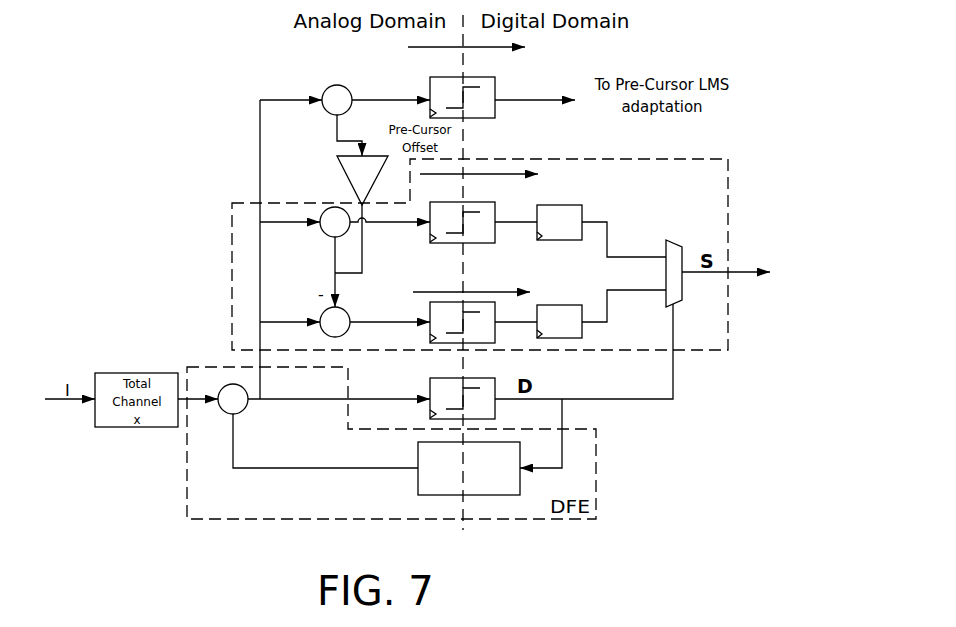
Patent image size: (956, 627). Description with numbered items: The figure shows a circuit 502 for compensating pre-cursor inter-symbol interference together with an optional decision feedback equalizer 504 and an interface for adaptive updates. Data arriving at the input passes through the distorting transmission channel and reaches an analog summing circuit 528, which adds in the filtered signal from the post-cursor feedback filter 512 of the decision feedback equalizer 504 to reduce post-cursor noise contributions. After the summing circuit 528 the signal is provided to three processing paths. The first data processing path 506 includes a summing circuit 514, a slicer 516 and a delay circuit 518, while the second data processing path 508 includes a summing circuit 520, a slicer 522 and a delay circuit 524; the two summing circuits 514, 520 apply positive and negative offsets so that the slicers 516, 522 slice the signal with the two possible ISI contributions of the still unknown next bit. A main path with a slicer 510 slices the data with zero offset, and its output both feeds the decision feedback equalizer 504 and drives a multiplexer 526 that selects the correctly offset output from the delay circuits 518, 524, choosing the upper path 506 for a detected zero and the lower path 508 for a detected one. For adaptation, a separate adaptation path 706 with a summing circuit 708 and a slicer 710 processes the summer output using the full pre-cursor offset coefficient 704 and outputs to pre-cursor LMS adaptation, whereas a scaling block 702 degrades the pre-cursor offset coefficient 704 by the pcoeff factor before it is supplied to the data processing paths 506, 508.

The circuit 502 is at (693, 352).
The decision feedback equalizer 504 is at (391, 443).
The first data processing path 506 is at (483, 176).
The second data processing path 508 is at (489, 281).
The slicer 510 is at (483, 379).
The post-cursor feedback filter 512 is at (418, 483).
The summing circuit 514 is at (324, 233).
The slicer 516 is at (483, 245).
The delay circuit 518 is at (573, 206).
The summing circuit 520 is at (347, 334).
The slicer 522 is at (447, 343).
The delay circuit 524 is at (563, 339).
The multiplexer 526 is at (670, 241).
The summing circuit 528 is at (245, 410).
The scaling block 702 is at (348, 166).
The pre-cursor offset coefficient 704 is at (468, 139).
The adaptation path 706 is at (486, 50).
The summing circuit 708 is at (350, 92).
The slicer 710 is at (488, 91).